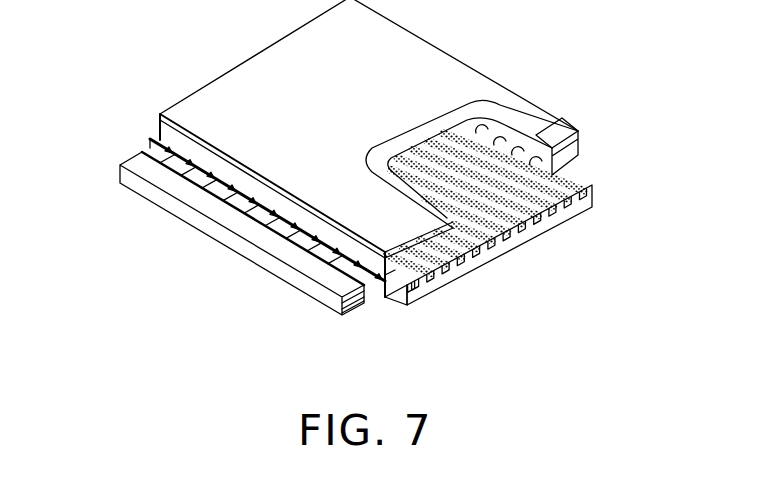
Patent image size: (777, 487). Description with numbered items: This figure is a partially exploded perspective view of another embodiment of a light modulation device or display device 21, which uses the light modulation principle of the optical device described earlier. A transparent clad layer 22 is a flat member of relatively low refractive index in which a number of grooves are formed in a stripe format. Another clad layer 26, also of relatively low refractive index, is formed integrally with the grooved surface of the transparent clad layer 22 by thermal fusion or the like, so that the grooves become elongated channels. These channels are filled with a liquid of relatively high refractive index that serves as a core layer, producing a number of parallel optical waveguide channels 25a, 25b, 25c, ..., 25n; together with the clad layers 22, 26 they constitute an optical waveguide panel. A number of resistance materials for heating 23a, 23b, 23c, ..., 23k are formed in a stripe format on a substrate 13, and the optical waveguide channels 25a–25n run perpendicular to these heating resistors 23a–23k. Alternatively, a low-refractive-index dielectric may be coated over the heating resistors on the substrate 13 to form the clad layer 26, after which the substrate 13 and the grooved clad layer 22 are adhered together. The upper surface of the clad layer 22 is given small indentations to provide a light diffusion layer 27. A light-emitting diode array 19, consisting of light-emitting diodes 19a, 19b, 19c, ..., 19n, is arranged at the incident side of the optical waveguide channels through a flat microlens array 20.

The substrate 13 is at (405, 310).
The light-emitting diode array 19 is at (120, 184).
The light-emitting diode 19a is at (340, 283).
The light-emitting diode 19b is at (318, 273).
The light-emitting diode 19c is at (263, 274).
The light-emitting diode 19n is at (210, 283).
The flat microlens array 20 is at (158, 142).
The light modulation device or display device 21 is at (210, 85).
The transparent clad layer 22 is at (573, 152).
The heating resistor 23a is at (416, 294).
The heating resistor 23b is at (432, 284).
The heating resistor 23c is at (448, 272).
The heating resistor 23k is at (552, 282).
The optical waveguide channel 25a is at (370, 252).
The optical waveguide channel 25b is at (357, 250).
The optical waveguide channel 25c is at (500, 128).
The optical waveguide channel 25n is at (317, 178).
The clad layer 26 is at (586, 180).
The light diffusion layer 27 is at (402, 50).